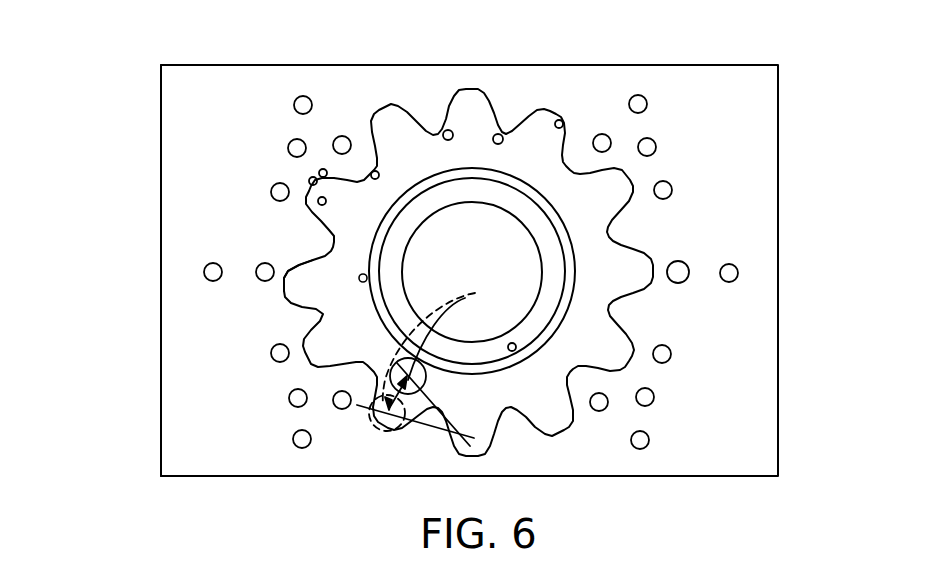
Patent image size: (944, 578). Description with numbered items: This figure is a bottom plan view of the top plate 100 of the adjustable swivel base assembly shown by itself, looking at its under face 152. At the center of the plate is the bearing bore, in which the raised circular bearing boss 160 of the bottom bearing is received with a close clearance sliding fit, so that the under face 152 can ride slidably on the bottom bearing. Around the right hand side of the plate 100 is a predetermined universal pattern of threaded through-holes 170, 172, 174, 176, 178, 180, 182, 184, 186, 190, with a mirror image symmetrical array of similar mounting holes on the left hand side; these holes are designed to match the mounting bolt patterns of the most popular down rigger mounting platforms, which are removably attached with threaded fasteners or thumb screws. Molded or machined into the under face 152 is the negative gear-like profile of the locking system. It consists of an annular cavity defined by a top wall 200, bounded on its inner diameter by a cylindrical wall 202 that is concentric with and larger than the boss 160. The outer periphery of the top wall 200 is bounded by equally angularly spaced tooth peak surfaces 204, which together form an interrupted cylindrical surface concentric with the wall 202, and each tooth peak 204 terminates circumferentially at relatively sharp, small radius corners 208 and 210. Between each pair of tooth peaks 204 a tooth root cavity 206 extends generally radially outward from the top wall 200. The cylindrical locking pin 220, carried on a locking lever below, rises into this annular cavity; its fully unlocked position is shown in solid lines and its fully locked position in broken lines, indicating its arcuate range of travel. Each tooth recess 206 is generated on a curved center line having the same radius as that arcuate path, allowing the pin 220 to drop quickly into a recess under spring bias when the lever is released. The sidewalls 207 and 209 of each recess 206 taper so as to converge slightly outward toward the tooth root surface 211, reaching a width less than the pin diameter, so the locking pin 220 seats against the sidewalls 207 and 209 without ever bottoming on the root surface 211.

The top plate 100 is at (140, 168).
The under face 152 is at (187, 433).
The bearing boss 160 is at (513, 350).
The threaded through-hole 170 is at (645, 94).
The threaded through-hole 172 is at (608, 137).
The threaded through-hole 174 is at (652, 144).
The threaded through-hole 176 is at (668, 185).
The threaded through-hole 178 is at (676, 261).
The threaded through-hole 180 is at (731, 265).
The threaded through-hole 182 is at (667, 350).
The threaded through-hole 184 is at (651, 393).
The threaded through-hole 186 is at (647, 436).
The threaded through-hole 190 is at (600, 411).
The top wall 200 is at (437, 163).
The cylindrical wall 202 is at (362, 272).
The tooth peak surfaces 204 is at (375, 172).
The tooth root cavity 206 is at (318, 329).
The sidewall 207 is at (318, 204).
The corner 208 is at (499, 134).
The sidewall 209 is at (323, 169).
The corner 210 is at (561, 120).
The tooth root surface 211 is at (312, 177).
The locking pin 220 is at (470, 296).